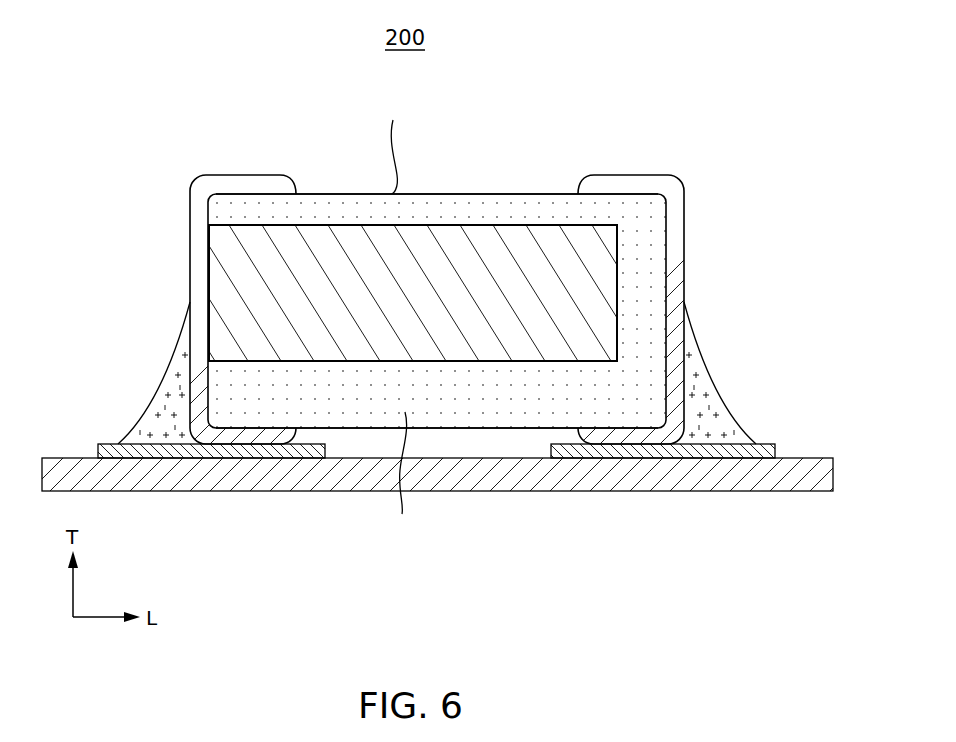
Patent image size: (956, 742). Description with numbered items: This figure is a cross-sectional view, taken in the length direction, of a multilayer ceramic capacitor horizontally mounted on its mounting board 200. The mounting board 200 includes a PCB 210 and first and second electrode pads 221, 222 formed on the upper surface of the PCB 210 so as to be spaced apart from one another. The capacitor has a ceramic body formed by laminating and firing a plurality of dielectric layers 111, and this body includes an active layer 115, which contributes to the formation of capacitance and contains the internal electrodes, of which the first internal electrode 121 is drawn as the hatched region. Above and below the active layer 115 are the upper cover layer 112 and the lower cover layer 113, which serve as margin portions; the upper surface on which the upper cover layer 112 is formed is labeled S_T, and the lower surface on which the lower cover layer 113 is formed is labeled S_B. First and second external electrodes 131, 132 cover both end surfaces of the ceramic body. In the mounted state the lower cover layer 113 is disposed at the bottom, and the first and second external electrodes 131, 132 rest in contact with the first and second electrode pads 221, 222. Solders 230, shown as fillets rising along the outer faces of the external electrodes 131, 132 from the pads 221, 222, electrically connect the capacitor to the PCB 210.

The mounting board 200 is at (524, 321).
The dielectric layer 111 is at (645, 300).
The upper cover layer 112 is at (465, 203).
The lower cover layer 113 is at (463, 412).
The active layer 115 is at (630, 268).
The first internal electrode 121 is at (227, 265).
The first external electrode 131 is at (242, 185).
The second external electrode 132 is at (628, 185).
The PCB 210 is at (742, 486).
The first electrode pad 221 is at (108, 447).
The second electrode pad 222 is at (768, 447).
The solder 230 is at (158, 400).